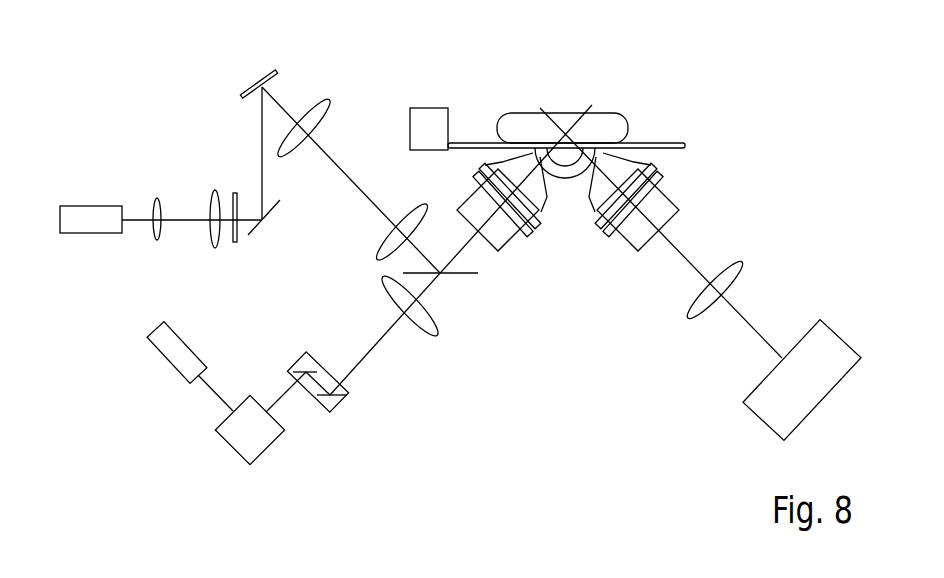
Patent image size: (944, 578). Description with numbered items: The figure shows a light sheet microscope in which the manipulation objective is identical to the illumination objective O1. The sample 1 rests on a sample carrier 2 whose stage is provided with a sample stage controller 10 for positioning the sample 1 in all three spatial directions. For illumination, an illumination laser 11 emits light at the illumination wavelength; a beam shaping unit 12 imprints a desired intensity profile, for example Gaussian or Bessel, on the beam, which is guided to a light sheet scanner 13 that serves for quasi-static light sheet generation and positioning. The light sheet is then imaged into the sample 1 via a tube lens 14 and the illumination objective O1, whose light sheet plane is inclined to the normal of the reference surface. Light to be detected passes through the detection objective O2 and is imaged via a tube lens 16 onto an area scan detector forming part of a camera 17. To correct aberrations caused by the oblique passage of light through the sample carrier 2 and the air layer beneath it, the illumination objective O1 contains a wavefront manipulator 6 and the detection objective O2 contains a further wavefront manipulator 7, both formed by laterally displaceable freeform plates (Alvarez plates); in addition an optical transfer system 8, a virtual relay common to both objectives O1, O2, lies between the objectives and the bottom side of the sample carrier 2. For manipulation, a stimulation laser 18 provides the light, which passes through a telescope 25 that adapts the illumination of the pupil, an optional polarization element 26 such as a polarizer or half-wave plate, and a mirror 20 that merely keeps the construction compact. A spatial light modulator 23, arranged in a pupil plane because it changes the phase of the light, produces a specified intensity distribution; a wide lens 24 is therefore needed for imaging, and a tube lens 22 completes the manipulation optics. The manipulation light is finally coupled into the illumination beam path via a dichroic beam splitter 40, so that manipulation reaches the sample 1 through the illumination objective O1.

The sample 1 is at (607, 113).
The sample carrier 2 is at (658, 143).
The wavefront manipulator 6 is at (530, 233).
The further wavefront manipulator 7 is at (658, 172).
The optical transfer system 8 is at (567, 167).
The sample stage controller 10 is at (448, 108).
The illumination laser 11 is at (172, 360).
The beam shaping unit 12 is at (228, 443).
The light sheet scanner 13 is at (330, 413).
The tube lens 14 is at (418, 327).
The tube lens 16 is at (742, 260).
The camera 17 is at (748, 400).
The stimulation laser 18 is at (87, 207).
The mirror 20 is at (273, 208).
The tube lens 22 is at (402, 207).
The spatial light modulator 23 is at (253, 82).
The wide lens 24 is at (323, 100).
The telescope 25 is at (222, 187).
The polarization element 26 is at (237, 242).
The dichroic beam splitter 40 is at (462, 275).
The illumination objective O1 is at (500, 243).
The detection objective O2 is at (638, 243).